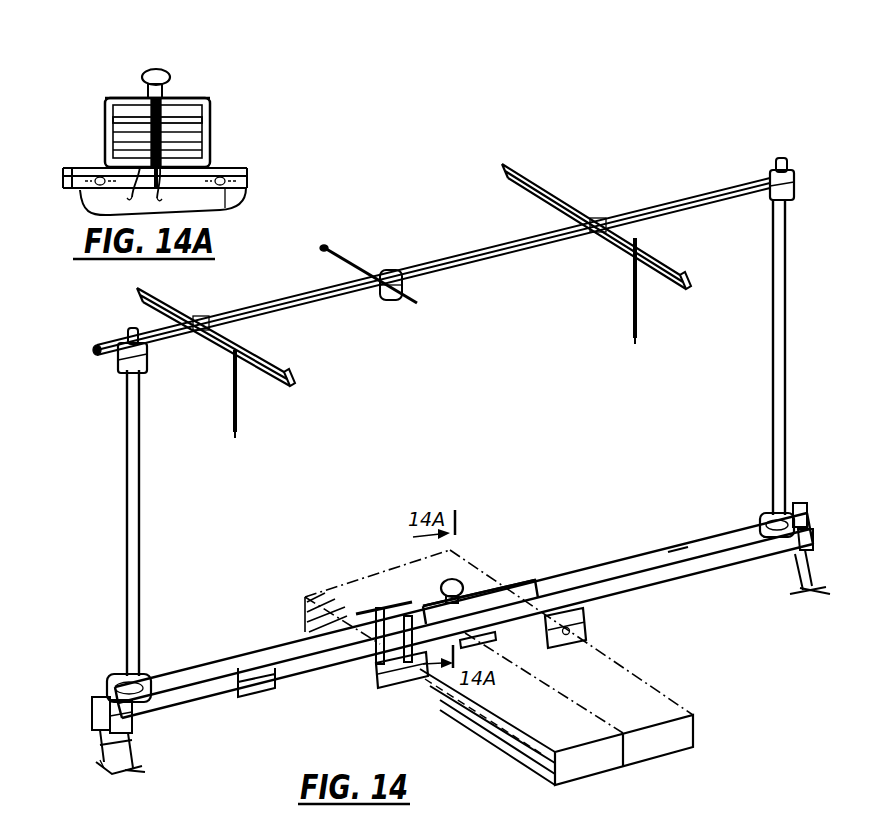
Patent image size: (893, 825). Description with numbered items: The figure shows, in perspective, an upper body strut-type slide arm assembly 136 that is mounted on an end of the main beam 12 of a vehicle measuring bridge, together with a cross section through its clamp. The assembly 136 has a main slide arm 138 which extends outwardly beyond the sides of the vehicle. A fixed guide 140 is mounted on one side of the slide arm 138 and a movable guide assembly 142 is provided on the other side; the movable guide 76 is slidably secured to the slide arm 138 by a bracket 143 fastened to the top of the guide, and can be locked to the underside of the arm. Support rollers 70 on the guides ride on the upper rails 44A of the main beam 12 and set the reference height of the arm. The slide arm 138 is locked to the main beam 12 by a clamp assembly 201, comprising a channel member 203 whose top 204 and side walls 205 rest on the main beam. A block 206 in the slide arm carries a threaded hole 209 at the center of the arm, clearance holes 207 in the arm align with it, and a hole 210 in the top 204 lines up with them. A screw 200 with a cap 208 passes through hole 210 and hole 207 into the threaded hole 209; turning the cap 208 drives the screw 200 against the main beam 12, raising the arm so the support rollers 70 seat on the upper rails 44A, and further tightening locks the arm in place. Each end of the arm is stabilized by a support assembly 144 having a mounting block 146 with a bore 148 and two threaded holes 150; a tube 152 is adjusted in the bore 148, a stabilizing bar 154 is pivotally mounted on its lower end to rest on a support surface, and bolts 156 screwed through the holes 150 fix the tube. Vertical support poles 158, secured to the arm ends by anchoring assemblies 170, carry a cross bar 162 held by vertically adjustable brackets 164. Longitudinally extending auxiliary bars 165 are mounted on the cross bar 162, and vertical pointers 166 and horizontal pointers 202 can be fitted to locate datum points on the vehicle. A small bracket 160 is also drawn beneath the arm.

In FIG. 14, the main beam 12 is at (697, 697).
In FIG. 14A, the main beam 12 is at (75, 164).
In FIG. 14A, the upper rails 44A is at (247, 183).
In FIG. 14A, the support rollers 70 is at (84, 196).
In FIG. 14, the movable guide 76 is at (407, 642).
In FIG. 14, the upper body strut-type slide arm assembly 136 is at (695, 600).
In FIG. 14, the main slide arm 138 is at (690, 550).
In FIG. 14A, the main slide arm 138 is at (213, 113).
In FIG. 14, the fixed guide 140 is at (597, 634).
In FIG. 14, the movable guide assembly 142 is at (368, 673).
In FIG. 14, the bracket 143 is at (357, 603).
In FIG. 14, the support assemblies 144 is at (101, 667).
In FIG. 14, the mounting block 146 is at (128, 717).
In FIG. 14, the bore 148 is at (105, 696).
In FIG. 14, the threaded holes 150 is at (100, 710).
In FIG. 14, the tube 152 is at (128, 734).
In FIG. 14, the stabilizing bar 154 is at (133, 754).
In FIG. 14, the bolts 156 is at (94, 725).
In FIG. 14, the vertical support poles 158 is at (138, 477).
In FIG. 14, the bracket 160 is at (257, 698).
In FIG. 14, the cross bar 162 is at (290, 302).
In FIG. 14, the adjustable brackets 164 is at (147, 358).
In FIG. 14, the auxiliary bars 165 is at (281, 372).
In FIG. 14, the vertical pointers 166 is at (240, 420).
In FIG. 14, the anchoring assembly 170 is at (154, 674).
In FIG. 14A, the screw 200 is at (137, 193).
In FIG. 14, the clamp assembly 201 is at (478, 588).
In FIG. 14A, the clamp assembly 201 is at (207, 98).
In FIG. 14, the horizontal pointers 202 is at (355, 264).
In FIG. 14, the channel member 203 is at (486, 632).
In FIG. 14A, the channel member 203 is at (214, 106).
In FIG. 14, the top 204 is at (528, 585).
In FIG. 14A, the top 204 is at (110, 100).
In FIG. 14A, the side walls 205 is at (108, 106).
In FIG. 14A, the block 206 is at (190, 127).
In FIG. 14A, the clearance holes 207 is at (163, 107).
In FIG. 14, the cap 208 is at (458, 580).
In FIG. 14A, the cap 208 is at (156, 69).
In FIG. 14A, the threaded hole 209 is at (110, 130).
In FIG. 14A, the hole 210 is at (146, 97).